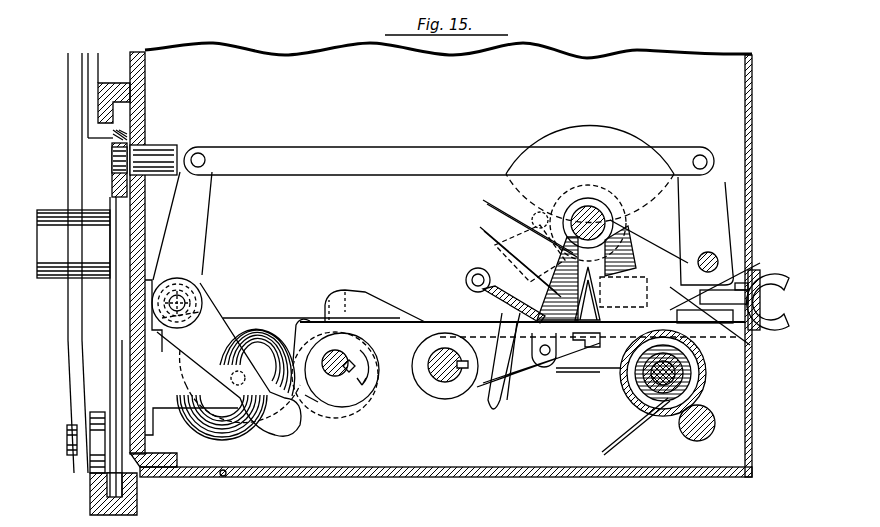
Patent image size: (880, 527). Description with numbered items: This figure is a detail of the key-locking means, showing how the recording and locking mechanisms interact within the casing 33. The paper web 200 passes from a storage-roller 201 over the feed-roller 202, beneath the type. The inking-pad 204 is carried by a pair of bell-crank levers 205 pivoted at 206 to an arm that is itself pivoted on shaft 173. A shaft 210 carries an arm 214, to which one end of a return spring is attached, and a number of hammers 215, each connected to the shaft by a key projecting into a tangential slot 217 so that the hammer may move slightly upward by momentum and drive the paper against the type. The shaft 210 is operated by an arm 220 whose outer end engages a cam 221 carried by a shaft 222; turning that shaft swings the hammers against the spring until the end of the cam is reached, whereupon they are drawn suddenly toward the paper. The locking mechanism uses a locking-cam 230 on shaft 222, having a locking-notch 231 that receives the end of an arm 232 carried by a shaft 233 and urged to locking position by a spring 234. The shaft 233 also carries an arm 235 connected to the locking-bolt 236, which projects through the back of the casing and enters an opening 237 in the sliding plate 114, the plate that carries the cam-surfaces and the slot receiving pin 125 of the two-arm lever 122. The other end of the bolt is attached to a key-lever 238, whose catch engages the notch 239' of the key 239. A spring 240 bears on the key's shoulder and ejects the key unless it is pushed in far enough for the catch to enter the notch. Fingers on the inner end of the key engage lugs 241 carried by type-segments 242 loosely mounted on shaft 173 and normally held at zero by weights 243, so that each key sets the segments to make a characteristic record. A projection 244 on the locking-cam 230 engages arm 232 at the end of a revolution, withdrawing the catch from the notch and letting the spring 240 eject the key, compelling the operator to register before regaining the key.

The casing 33 is at (146, 86).
The two-arm lever 122 is at (70, 137).
The sliding plate 114 is at (110, 340).
The pin 125 is at (70, 447).
The opening 237 is at (112, 162).
The locking-bolt 236 is at (158, 158).
The key-lever 238 is at (718, 177).
The arm 235 is at (182, 226).
The shaft 233 is at (183, 298).
The spring 234 is at (200, 312).
The arm 232 is at (229, 359).
The storage-roller 201 is at (215, 425).
The projection 244 is at (292, 340).
The locking-cam 230 is at (347, 408).
The cam 221 is at (323, 310).
The shaft 222 is at (343, 360).
The locking-notch 231 is at (312, 397).
The paper web 200 is at (425, 320).
The arm 220 is at (428, 362).
The shaft 210 is at (432, 378).
The tangential slot 217 is at (438, 370).
The bell-crank lever 205 is at (477, 388).
The inking-pad 204 is at (508, 400).
The hammer 215 is at (587, 350).
The arm 214 is at (613, 363).
The feed-roller 202 is at (663, 407).
The shaft 173 is at (603, 223).
The lugs 241 is at (640, 270).
The weights 243 is at (523, 264).
The type-segments 242 is at (514, 222).
The pivot 206 is at (473, 272).
The key 239 is at (735, 323).
The notch 239' is at (768, 329).
The spring 240 is at (712, 343).